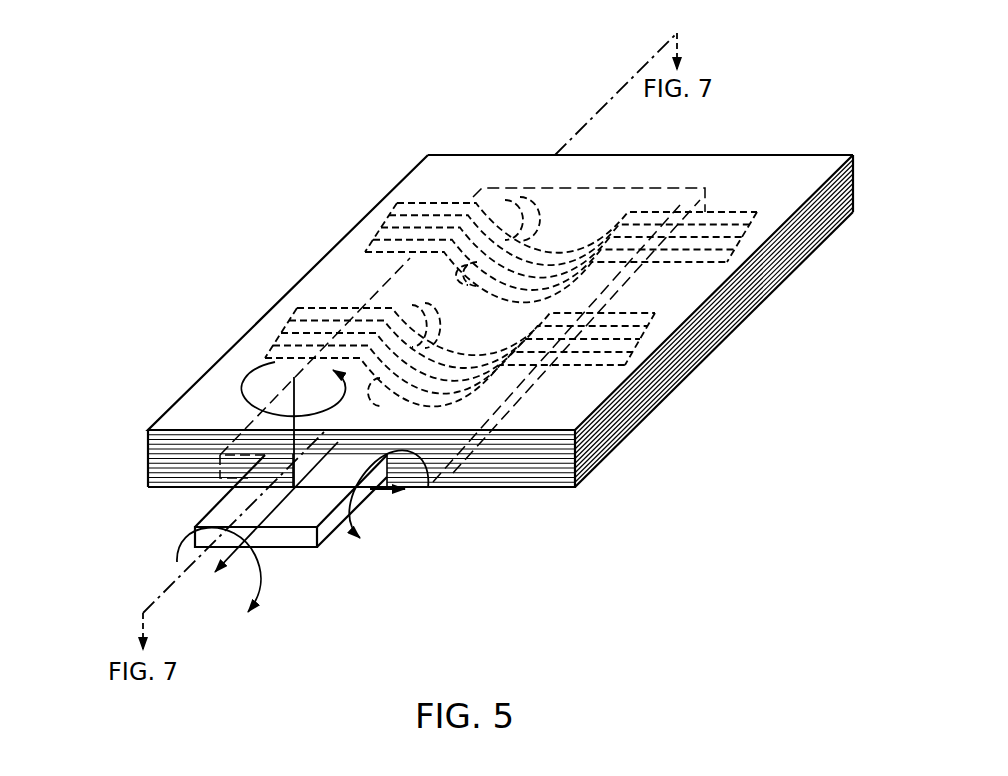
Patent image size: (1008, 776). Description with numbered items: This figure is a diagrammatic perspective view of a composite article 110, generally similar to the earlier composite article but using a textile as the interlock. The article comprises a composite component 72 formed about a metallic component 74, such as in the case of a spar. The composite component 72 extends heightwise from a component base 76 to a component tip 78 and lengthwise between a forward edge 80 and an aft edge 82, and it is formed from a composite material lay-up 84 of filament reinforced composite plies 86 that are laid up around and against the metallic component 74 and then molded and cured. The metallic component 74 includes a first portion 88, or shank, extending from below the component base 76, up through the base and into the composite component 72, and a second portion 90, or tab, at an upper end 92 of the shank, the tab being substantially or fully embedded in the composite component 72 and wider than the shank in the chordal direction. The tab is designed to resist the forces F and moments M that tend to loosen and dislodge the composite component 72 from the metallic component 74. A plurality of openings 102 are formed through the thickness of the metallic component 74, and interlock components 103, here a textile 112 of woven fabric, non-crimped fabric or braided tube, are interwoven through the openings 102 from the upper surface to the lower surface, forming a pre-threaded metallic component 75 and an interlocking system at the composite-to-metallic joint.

The composite article 110 is at (312, 112).
The forward edge 80 is at (302, 268).
The component tip 78 is at (828, 154).
The component base 76 is at (550, 475).
The composite material lay-up 84 is at (168, 452).
The aft edge 82 is at (706, 350).
The filament reinforced composite plies 86 is at (622, 450).
The composite component 72 is at (843, 218).
The pre-threaded metallic component 75 is at (224, 491).
The first portion 88 is at (278, 550).
The metallic component 74 is at (372, 495).
The second portion 90 is at (620, 197).
The upper end 92 is at (682, 198).
The textile 112 is at (388, 228).
The openings 102 is at (480, 220).
The interlock components 103 is at (740, 245).